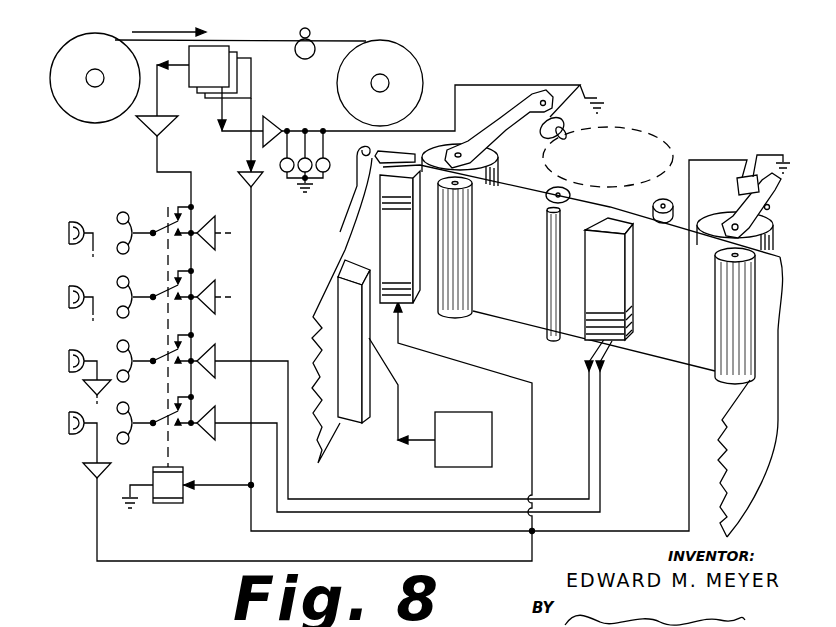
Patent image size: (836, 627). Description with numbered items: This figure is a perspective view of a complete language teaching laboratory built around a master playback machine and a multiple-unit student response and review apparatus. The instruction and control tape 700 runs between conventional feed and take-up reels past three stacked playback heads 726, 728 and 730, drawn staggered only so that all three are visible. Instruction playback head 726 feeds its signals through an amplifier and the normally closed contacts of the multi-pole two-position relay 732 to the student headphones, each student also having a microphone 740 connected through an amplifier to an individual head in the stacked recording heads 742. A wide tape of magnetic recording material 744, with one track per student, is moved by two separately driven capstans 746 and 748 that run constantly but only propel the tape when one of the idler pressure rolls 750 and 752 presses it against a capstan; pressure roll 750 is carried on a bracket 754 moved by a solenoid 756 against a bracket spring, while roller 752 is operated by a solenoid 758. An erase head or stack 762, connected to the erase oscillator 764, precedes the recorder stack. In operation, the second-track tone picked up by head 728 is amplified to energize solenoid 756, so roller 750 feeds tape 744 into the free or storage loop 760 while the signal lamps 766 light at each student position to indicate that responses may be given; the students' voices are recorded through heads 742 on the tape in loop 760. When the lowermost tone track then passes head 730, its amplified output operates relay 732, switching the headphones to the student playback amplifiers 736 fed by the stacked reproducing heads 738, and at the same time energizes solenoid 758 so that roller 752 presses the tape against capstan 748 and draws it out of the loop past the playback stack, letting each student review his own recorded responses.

The instruction and control tape 700 is at (269, 41).
The instruction playback head 726 is at (222, 73).
The playback head 728 is at (230, 64).
The playback head 730 is at (244, 91).
The multi-pole two-position relay 732 is at (168, 458).
The student playback amplifiers 736 is at (207, 244).
The stacked reproducing heads 738 is at (612, 297).
The microphone 740 is at (83, 387).
The stacked recording heads 742 is at (388, 228).
The tape of magnetic recording material 744 is at (527, 257).
The drive capstan 746 is at (452, 312).
The drive capstan 748 is at (710, 377).
The idler pressure roll 750 is at (442, 145).
The idler pressure roll 752 is at (720, 217).
The bracket 754 is at (497, 120).
The solenoid 756 is at (563, 136).
The solenoid 758 is at (741, 178).
The free or storage loop 760 is at (665, 128).
The erase head or stack 762 is at (347, 422).
The erase oscillator 764 is at (486, 410).
The signal lamps 766 is at (296, 178).